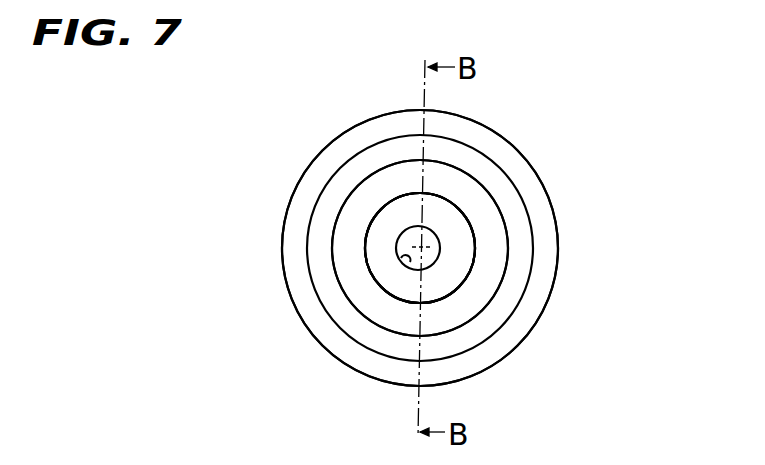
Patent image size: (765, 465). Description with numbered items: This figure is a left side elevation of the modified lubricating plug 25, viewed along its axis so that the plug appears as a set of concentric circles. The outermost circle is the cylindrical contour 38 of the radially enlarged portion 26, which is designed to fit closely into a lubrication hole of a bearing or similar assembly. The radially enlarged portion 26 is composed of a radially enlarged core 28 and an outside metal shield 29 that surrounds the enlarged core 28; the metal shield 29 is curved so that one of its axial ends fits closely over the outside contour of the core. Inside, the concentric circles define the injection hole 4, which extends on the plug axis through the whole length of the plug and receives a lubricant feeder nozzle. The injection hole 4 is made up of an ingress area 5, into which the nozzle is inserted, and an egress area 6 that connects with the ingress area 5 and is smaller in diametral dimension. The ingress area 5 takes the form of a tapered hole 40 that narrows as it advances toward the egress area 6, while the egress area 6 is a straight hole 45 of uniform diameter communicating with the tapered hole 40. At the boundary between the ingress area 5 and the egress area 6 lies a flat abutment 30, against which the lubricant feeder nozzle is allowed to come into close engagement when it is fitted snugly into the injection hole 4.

The modified lubricating plug 25 is at (323, 143).
The radially enlarged portion 26 is at (473, 165).
The metal shield 29 is at (527, 178).
The flat abutment 30 is at (378, 239).
The egress area 6 is at (436, 248).
The ingress area 5 is at (350, 268).
The radially enlarged core 28 is at (518, 268).
The injection hole 4 is at (377, 280).
The tapered hole 40 is at (483, 288).
The straight hole 45 is at (403, 264).
The cylindrical contour 38 is at (503, 360).